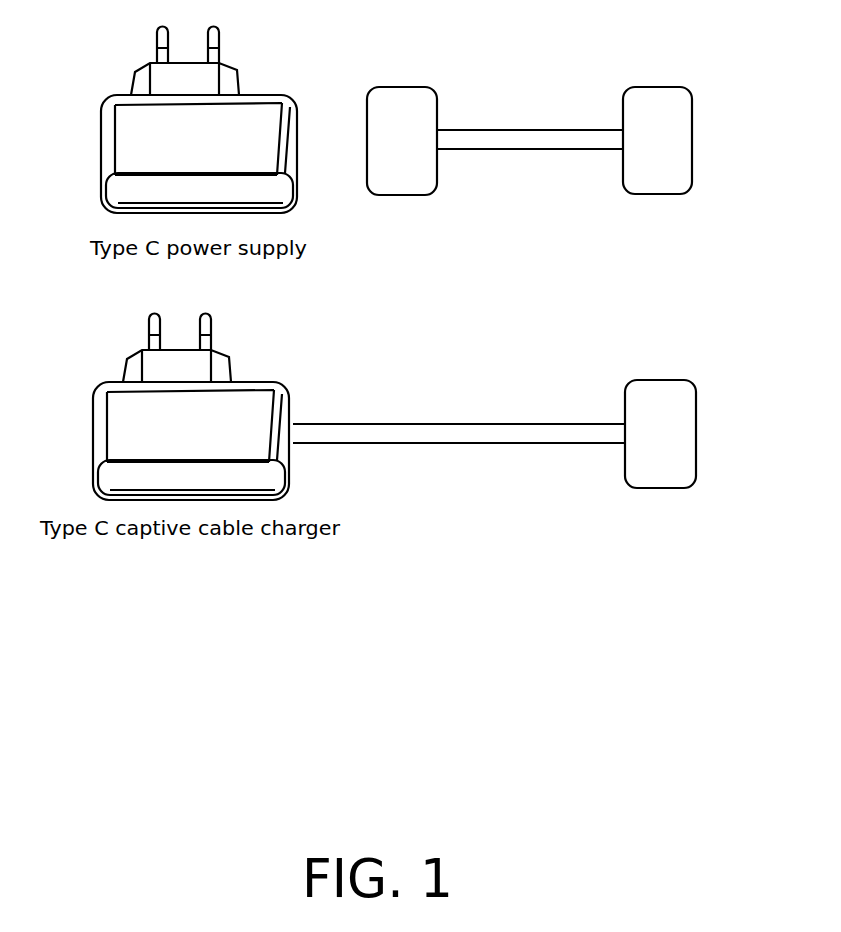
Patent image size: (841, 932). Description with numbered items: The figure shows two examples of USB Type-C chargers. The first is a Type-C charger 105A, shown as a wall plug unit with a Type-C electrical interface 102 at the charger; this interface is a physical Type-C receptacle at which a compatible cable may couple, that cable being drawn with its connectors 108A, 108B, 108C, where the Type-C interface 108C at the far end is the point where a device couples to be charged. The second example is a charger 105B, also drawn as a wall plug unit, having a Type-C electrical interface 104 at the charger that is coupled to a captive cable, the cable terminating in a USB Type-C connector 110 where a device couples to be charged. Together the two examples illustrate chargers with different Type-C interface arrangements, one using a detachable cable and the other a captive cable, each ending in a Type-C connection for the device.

The Type-C electrical interface 102 is at (192, 120).
The Type-C electrical interface 104 is at (327, 407).
The Type-C charger 105A is at (102, 142).
The charger 105B is at (94, 410).
The connector 108A is at (405, 87).
The connector 108B is at (497, 130).
The Type-C interface 108C is at (660, 87).
The USB Type-C connector 110 is at (662, 380).